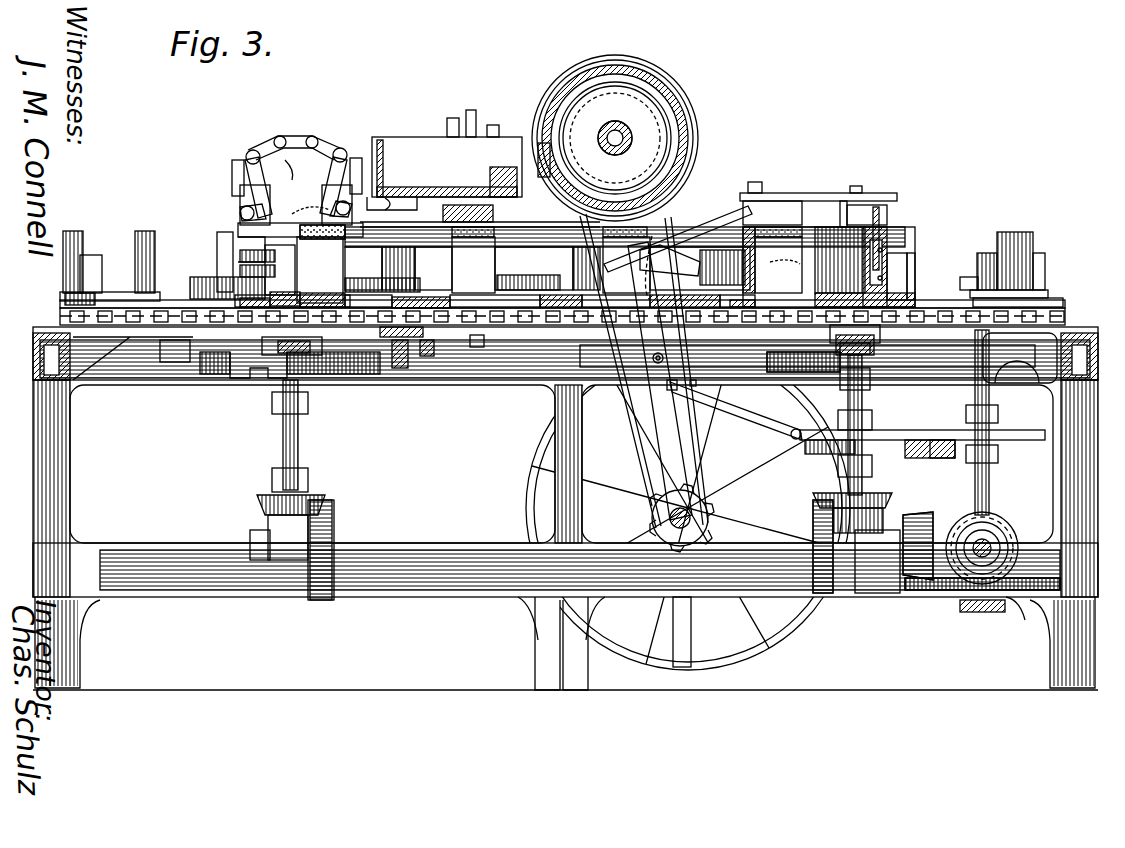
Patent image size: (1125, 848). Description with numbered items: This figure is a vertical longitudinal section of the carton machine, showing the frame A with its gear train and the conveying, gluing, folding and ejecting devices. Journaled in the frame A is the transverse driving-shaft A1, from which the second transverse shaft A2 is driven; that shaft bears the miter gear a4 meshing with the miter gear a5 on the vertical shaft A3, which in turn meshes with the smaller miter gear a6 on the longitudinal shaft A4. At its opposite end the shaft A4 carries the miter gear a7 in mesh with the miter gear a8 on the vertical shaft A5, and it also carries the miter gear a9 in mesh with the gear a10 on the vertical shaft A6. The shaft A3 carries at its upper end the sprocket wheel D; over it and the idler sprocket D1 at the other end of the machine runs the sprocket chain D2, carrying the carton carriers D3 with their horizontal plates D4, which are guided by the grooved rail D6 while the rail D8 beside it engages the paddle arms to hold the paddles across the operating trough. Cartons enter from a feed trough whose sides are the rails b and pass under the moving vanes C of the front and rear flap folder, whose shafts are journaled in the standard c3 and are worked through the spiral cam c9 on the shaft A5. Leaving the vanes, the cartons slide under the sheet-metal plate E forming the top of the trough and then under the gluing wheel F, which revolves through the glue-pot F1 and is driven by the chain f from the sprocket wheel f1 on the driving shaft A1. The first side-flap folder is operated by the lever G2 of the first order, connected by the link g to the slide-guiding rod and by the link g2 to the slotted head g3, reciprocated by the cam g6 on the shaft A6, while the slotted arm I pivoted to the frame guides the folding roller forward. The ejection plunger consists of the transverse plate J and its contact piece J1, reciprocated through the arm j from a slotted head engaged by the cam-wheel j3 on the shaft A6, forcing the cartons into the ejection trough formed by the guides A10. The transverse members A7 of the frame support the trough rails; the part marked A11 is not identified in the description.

The frame A is at (84, 468).
The driving-shaft A1 is at (688, 530).
The second shaft A2 is at (1005, 600).
The vertical shaft A3 is at (992, 487).
The longitudinal shaft A4 is at (462, 600).
The vertical shaft A5 is at (283, 436).
The vertical shaft A6 is at (866, 404).
The transverse members A7 is at (790, 372).
The guides A10 is at (825, 292).
The plate A11 is at (890, 226).
The miter gear a4 is at (955, 578).
The miter gear a5 is at (975, 598).
The miter gear a6 is at (920, 585).
The miter gear a7 is at (325, 600).
The miter gear a8 is at (257, 500).
The miter gear a9 is at (818, 575).
The gear a10 is at (848, 600).
The rails b is at (302, 360).
The moving vanes C is at (300, 215).
The standard c3 is at (300, 132).
The spiral cam c9 is at (242, 265).
The sprocket wheel D is at (1065, 320).
The idler sprocket D1 is at (150, 350).
The sprocket chain D2 is at (497, 345).
The carton carriers D3 is at (140, 236).
The horizontal plates D4 is at (420, 355).
The rail D6 is at (460, 345).
The rail D8 is at (544, 256).
The sheet-metal plate E is at (380, 240).
The gluing wheel F is at (690, 126).
The glue-pot F1 is at (480, 168).
The chain f is at (632, 436).
The sprocket wheel f1 is at (710, 518).
The lever G2 is at (644, 371).
The link g is at (680, 255).
The link g2 is at (750, 430).
The slotted head g3 is at (1015, 432).
The cam g6 is at (932, 460).
The slotted arm I is at (818, 195).
The transverse plate J is at (895, 246).
The contact piece J1 is at (822, 267).
The arm j is at (895, 345).
The cam-wheel j3 is at (800, 375).